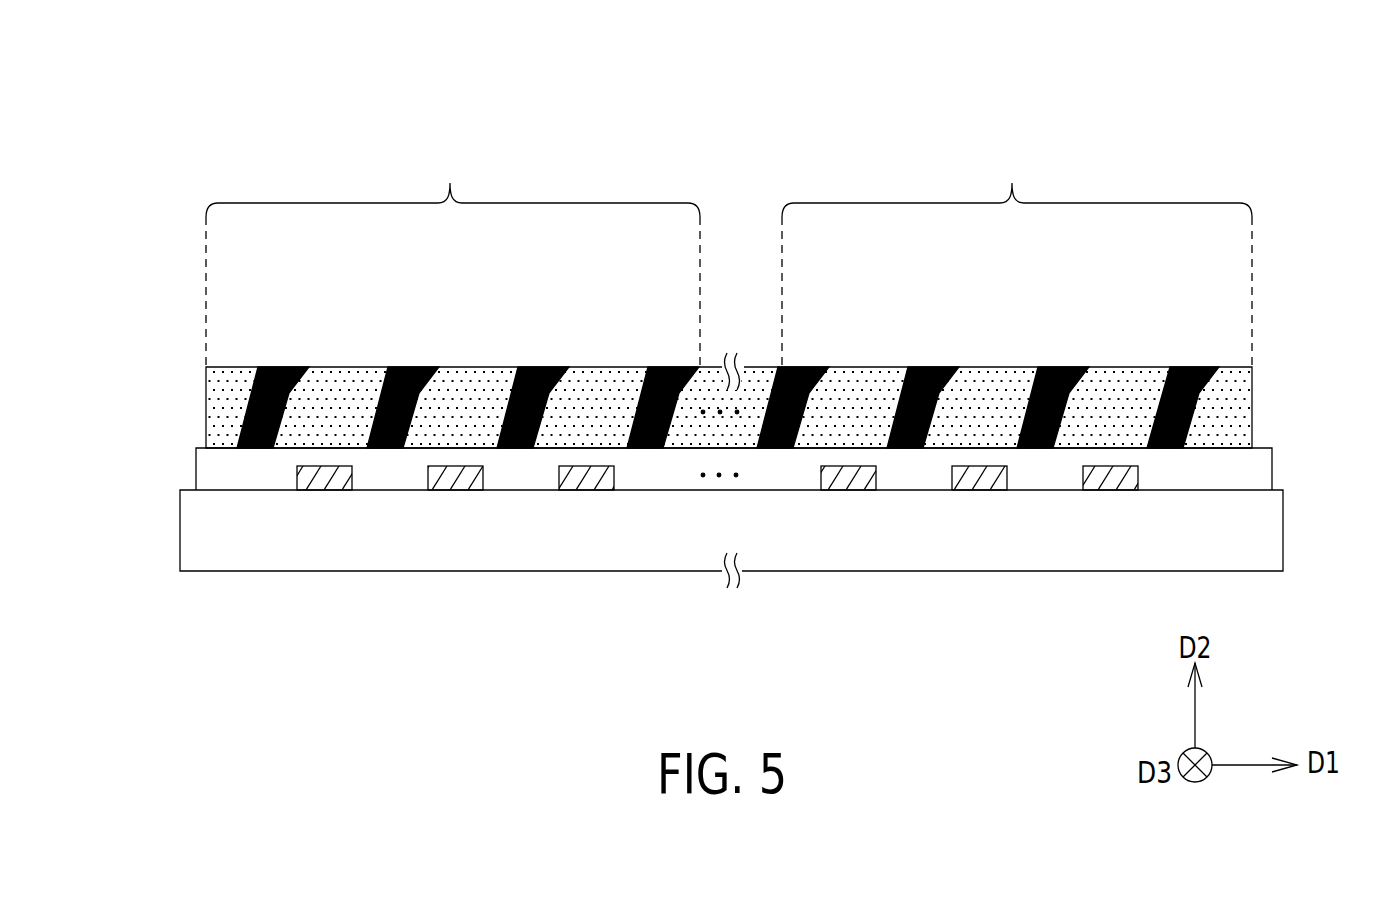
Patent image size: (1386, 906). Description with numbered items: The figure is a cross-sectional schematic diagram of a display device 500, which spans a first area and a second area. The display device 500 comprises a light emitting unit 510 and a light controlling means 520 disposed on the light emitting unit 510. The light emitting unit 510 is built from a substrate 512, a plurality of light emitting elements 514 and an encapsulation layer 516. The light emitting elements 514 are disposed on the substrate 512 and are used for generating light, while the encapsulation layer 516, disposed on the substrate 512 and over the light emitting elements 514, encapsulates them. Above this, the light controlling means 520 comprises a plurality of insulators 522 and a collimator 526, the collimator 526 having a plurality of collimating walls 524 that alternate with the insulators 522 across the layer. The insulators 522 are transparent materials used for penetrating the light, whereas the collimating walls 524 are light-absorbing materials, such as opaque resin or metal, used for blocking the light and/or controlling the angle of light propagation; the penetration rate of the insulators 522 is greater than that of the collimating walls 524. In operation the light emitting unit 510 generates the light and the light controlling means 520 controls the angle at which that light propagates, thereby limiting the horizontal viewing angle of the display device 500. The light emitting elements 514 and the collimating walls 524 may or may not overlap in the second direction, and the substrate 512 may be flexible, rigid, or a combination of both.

The display device 500 is at (1152, 100).
The light emitting unit 510 is at (171, 448).
The substrate 512 is at (1267, 530).
The light emitting elements 514 is at (1107, 477).
The encapsulation layer 516 is at (1253, 467).
The light controlling means 520 is at (187, 368).
The insulators 522 is at (1237, 407).
The collimating walls 524 is at (943, 367).
The collimator 526 is at (1225, 296).